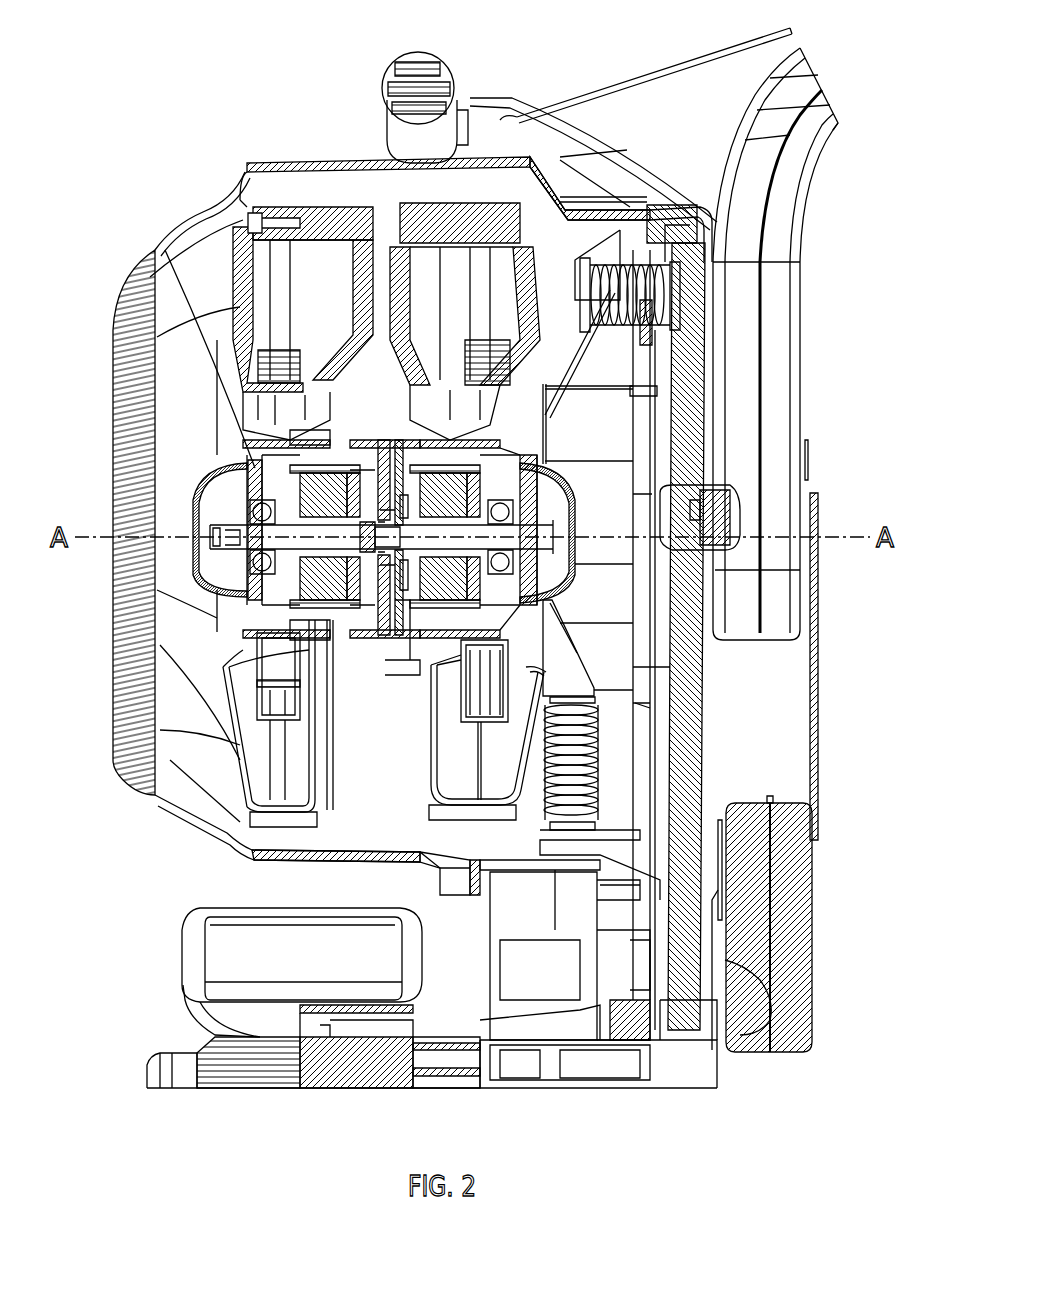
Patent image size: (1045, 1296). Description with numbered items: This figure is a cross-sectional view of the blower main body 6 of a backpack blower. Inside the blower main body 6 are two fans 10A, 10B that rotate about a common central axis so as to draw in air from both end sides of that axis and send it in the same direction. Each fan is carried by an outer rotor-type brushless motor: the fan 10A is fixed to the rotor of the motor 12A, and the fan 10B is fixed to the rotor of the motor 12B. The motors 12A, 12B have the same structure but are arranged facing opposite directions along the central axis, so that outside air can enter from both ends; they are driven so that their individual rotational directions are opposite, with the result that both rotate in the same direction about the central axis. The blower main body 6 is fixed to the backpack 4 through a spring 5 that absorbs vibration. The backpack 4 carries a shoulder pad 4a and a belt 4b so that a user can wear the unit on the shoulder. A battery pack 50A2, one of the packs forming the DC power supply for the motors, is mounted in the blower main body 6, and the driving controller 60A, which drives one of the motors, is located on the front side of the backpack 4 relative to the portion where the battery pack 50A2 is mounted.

The blower main body 6 is at (226, 165).
The outer rotor-type brushless motor 12A is at (247, 455).
The fan 10A is at (267, 357).
The outer rotor-type brushless motor 12B is at (396, 458).
The fan 10B is at (482, 372).
The shoulder pad 4a is at (782, 236).
The spring 5 is at (618, 325).
The belt 4b is at (852, 944).
The battery pack 50A2 is at (222, 962).
The backpack 4 is at (376, 1065).
The driving controller 60A is at (555, 960).